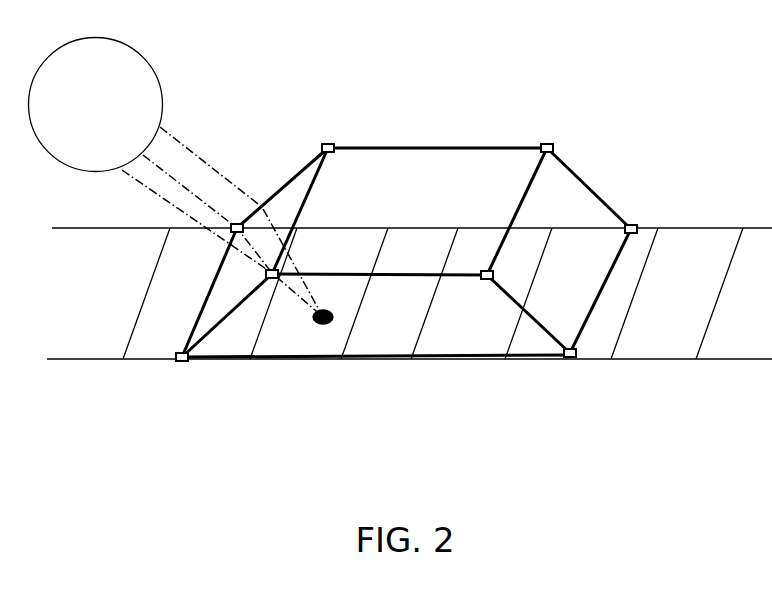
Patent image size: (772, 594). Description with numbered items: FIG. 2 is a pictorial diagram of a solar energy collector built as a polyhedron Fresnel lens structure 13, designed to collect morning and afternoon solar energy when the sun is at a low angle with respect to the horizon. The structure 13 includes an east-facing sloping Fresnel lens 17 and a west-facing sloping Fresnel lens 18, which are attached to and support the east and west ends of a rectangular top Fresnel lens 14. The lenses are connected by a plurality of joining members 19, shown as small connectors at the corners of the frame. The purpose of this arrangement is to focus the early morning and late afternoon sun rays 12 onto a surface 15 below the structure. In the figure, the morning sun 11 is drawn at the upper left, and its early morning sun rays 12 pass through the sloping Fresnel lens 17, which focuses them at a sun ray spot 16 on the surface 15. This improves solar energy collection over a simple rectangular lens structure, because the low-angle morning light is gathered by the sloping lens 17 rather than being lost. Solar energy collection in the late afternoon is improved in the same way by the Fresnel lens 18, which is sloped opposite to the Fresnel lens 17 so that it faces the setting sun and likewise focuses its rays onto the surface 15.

The morning sun 11 is at (127, 70).
The sun rays 12 is at (182, 141).
The polyhedron Fresnel lens structure 13 is at (207, 282).
The rectangular top Fresnel lens 14 is at (345, 190).
The surface 15 is at (667, 355).
The sun ray spot 16 is at (325, 323).
The east-facing sloping Fresnel lens 17 is at (237, 283).
The west-facing sloping Fresnel lens 18 is at (557, 280).
The joining members 19 is at (325, 142).